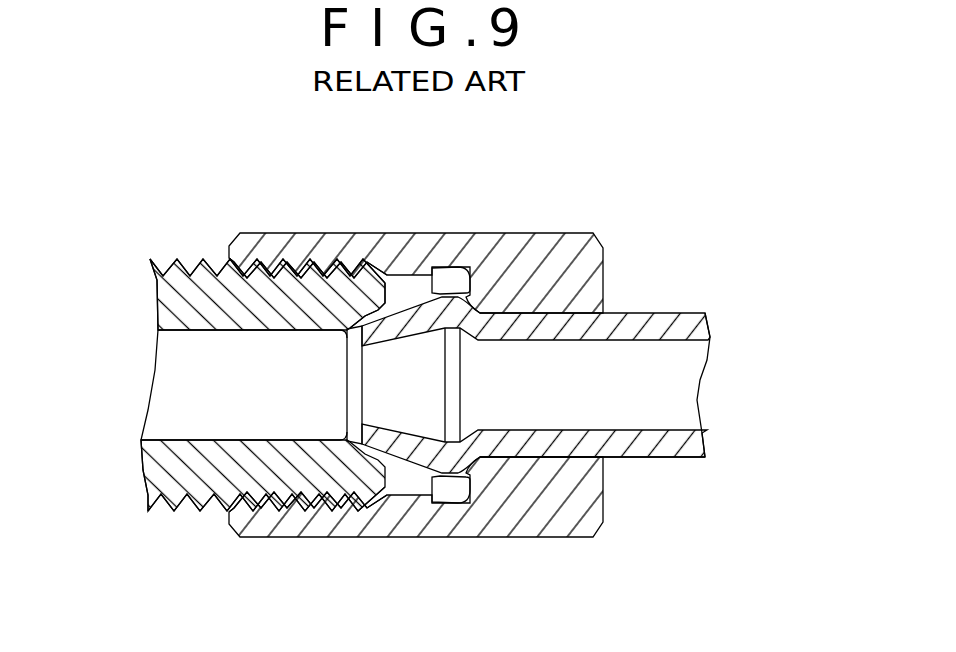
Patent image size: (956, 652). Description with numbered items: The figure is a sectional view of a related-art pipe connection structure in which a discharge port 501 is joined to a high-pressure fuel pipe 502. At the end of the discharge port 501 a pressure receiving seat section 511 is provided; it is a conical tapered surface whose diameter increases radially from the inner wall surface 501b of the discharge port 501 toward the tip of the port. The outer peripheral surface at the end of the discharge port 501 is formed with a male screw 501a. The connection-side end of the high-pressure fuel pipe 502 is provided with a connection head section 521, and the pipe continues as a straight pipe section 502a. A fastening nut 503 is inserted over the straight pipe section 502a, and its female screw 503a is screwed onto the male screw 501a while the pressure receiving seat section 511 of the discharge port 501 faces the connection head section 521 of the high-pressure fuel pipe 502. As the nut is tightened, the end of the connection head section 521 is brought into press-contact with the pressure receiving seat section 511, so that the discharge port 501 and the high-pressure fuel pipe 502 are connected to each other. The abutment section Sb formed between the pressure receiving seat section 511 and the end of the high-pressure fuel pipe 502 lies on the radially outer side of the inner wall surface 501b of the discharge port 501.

The discharge port 501 is at (147, 323).
The male screw 501a is at (245, 272).
The inner wall surface 501b is at (209, 331).
The high-pressure fuel pipe 502 is at (652, 313).
The straight pipe section 502a is at (551, 458).
The fastening nut 503 is at (413, 233).
The female screw 503a is at (262, 264).
The pressure receiving seat section 511 is at (332, 336).
The connection head section 521 is at (408, 295).
The abutment section Sb is at (364, 316).